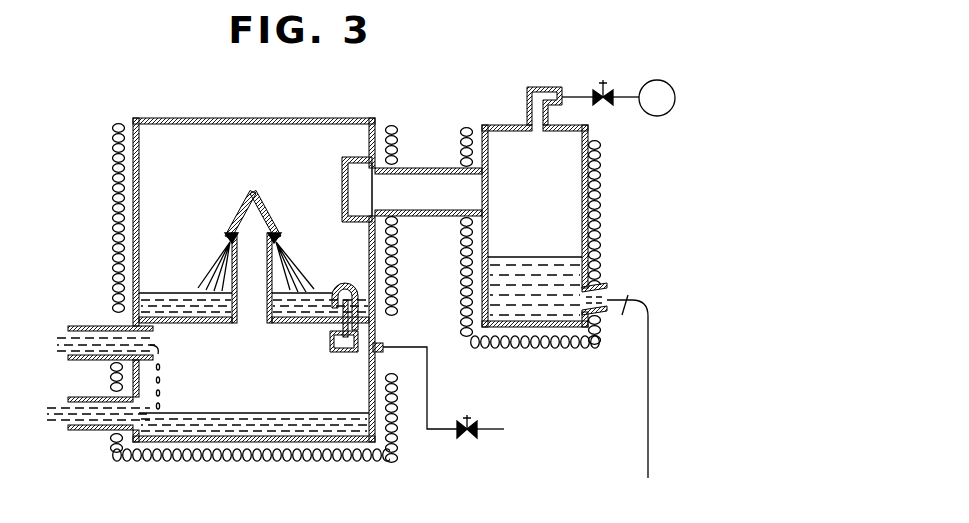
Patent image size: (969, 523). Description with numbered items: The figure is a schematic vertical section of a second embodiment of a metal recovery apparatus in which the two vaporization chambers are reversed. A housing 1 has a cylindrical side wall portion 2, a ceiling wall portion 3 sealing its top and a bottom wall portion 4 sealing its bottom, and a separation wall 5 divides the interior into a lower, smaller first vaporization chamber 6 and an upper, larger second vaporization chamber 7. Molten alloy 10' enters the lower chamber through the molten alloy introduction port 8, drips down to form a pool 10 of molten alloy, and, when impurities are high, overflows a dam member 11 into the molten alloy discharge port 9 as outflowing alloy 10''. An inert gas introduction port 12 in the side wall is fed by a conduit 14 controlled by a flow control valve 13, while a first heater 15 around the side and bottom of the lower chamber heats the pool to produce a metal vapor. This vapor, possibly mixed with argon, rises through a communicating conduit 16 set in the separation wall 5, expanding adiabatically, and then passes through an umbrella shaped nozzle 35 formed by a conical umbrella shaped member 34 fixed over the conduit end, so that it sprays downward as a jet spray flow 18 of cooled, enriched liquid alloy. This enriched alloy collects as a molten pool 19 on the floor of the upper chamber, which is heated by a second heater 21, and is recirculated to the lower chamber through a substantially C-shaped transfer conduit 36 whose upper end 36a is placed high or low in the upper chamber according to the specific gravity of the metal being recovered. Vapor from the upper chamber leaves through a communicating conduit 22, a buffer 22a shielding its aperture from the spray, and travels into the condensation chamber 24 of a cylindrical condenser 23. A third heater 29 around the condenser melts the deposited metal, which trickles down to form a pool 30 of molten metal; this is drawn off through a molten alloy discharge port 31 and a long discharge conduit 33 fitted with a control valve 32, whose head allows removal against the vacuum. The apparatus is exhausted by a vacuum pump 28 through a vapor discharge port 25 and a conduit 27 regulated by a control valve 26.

The housing 1 is at (381, 117).
The cylindrical side wall portion 2 is at (390, 250).
The ceiling wall portion 3 is at (364, 119).
The bottom wall portion 4 is at (283, 442).
The separation wall 5 is at (187, 324).
The first vaporization chamber 6 is at (322, 387).
The second vaporization chamber 7 is at (222, 165).
The molten alloy introduction port 8 is at (86, 326).
The molten alloy discharge port 9 is at (86, 398).
The pool of molten alloy 10 is at (254, 459).
The molten alloy 10' is at (91, 360).
The liquid in inlet pipe 10'' is at (83, 404).
The dam member 11 is at (160, 418).
The inert gas introduction port 12 is at (380, 354).
The flow control valve 13 is at (467, 418).
The conduit 14 is at (488, 429).
The first heater 15 is at (226, 464).
The communicating conduit 16 is at (267, 296).
The jet spray flow 18 is at (290, 270).
The molten pool 19 is at (175, 292).
The second heater 21 is at (112, 183).
The communicating conduit 22 is at (428, 168).
The buffer 22a is at (342, 180).
The condenser 23 is at (592, 142).
The condensation chamber 24 is at (555, 175).
The vapor discharge port 25 is at (527, 104).
The control valve 26 is at (603, 80).
The conduit 27 is at (570, 96).
The vacuum pump 28 is at (657, 80).
The third heater 29 is at (483, 350).
The pool of molten metal 30 is at (526, 262).
The molten alloy discharge port 31 is at (605, 314).
The control valve 32 is at (625, 303).
The discharge conduit 33 is at (647, 442).
The umbrella shaped member 34 is at (272, 219).
The umbrella shaped nozzle 35 is at (226, 210).
The C-shaped transfer conduit 36 is at (370, 320).
The upper end of transfer conduit 36a is at (328, 313).